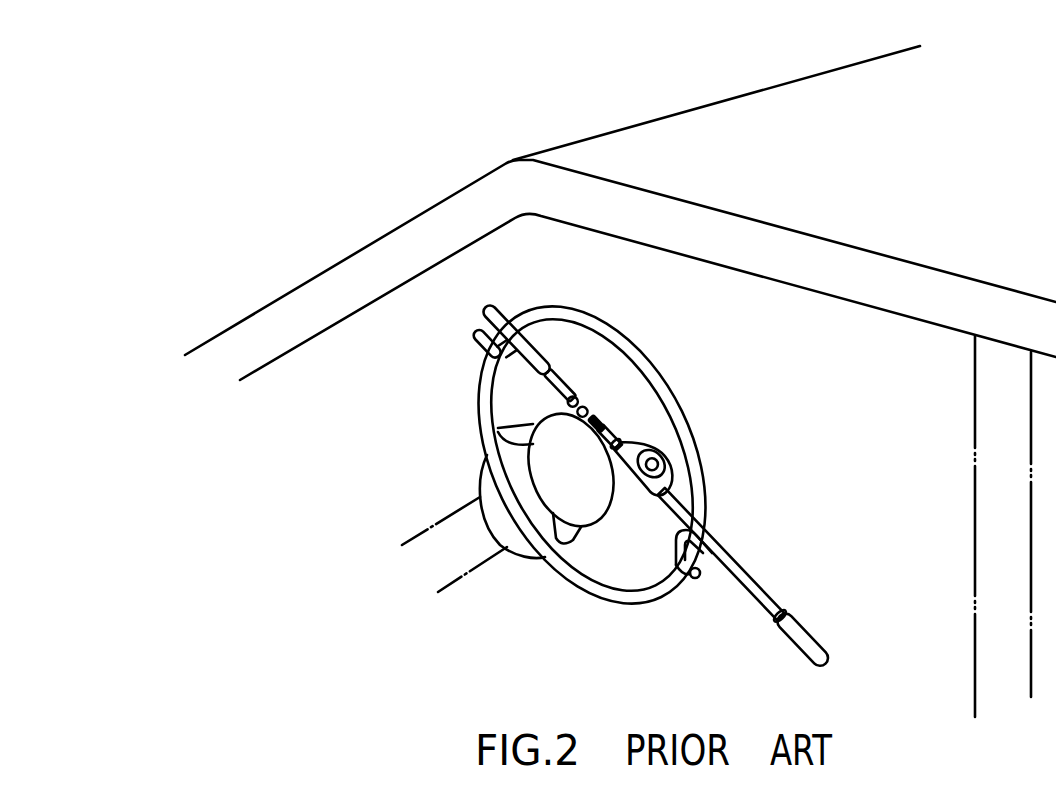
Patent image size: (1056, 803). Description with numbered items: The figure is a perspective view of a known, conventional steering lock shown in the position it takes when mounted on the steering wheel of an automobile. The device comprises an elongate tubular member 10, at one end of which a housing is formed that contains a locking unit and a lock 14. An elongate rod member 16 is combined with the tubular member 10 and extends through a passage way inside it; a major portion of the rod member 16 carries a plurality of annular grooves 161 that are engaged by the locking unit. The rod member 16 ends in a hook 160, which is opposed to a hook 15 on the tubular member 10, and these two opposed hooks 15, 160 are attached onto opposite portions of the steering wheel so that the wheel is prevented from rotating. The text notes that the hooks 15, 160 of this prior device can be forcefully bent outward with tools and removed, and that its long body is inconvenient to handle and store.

The elongate tubular member 10 is at (770, 583).
The lock 14 is at (670, 461).
The hook 15 is at (698, 580).
The elongate rod member 16 is at (573, 388).
The hook 160 is at (473, 357).
The annular grooves 161 is at (596, 390).